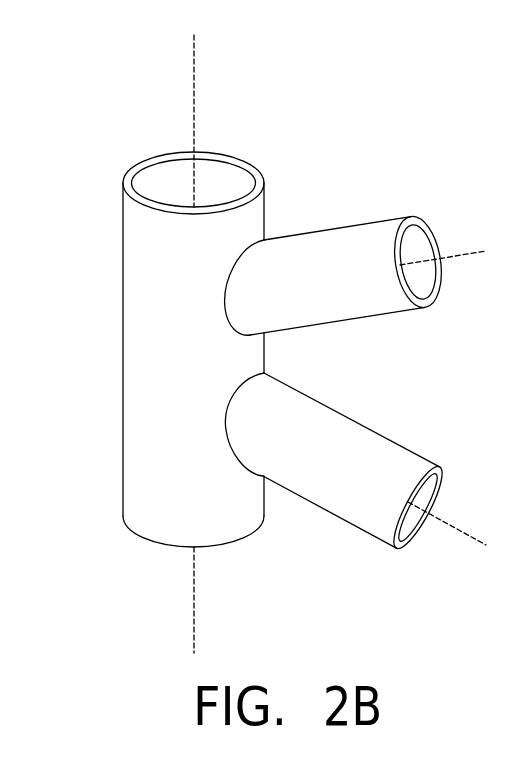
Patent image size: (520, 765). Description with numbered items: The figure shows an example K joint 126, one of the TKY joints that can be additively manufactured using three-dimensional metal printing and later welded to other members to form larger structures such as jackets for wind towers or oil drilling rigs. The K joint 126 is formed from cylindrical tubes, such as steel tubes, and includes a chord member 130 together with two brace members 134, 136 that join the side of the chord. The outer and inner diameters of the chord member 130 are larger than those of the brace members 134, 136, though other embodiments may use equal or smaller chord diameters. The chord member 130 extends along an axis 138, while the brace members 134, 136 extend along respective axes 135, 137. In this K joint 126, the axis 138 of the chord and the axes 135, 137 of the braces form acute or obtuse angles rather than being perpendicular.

The K joint 126 is at (246, 124).
The chord member 130 is at (135, 485).
The brace member 134 is at (335, 227).
The axis 135 is at (460, 255).
The brace member 136 is at (348, 527).
The axis 137 is at (450, 520).
The axis 138 is at (194, 48).